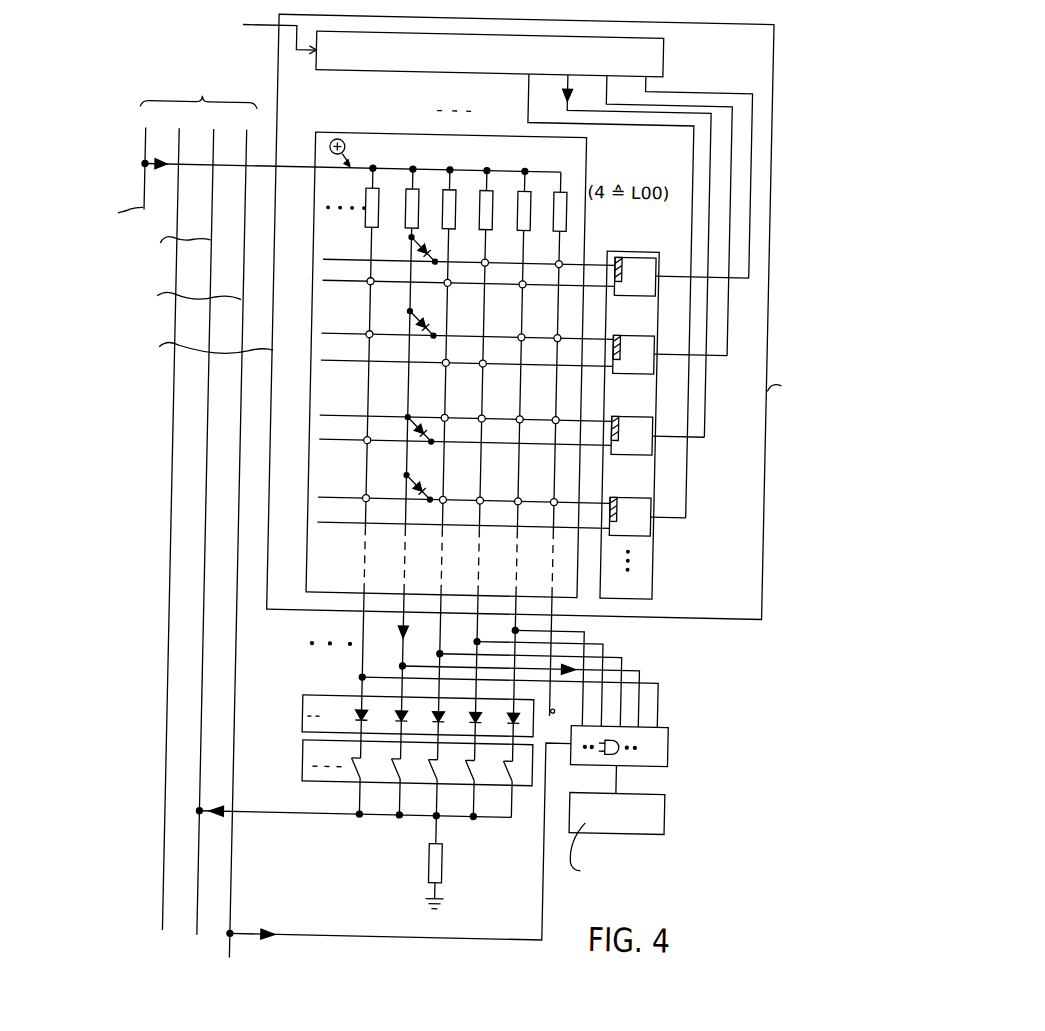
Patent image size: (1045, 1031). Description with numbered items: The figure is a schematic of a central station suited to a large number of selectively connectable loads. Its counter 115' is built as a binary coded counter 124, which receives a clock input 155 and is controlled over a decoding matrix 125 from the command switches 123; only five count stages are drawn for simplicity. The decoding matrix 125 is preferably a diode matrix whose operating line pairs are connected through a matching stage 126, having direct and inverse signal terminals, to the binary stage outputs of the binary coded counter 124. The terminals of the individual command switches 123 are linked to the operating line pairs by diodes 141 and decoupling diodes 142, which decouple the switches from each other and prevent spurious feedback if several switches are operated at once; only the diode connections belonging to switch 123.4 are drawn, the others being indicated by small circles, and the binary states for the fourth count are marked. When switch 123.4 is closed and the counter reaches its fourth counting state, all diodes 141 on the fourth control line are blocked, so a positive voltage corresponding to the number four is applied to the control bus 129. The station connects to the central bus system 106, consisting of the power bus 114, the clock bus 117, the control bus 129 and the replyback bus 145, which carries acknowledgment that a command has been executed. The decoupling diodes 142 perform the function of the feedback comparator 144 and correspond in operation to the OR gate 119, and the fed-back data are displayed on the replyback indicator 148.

The clock input line from Fig. 2 155 is at (246, 28).
The central bus system 106 is at (199, 88).
The power bus 114 is at (140, 163).
The clock bus 117 is at (174, 163).
The control bus 129 is at (209, 163).
The replyback bus 145 is at (241, 163).
The binary coded counter 124 is at (655, 52).
The decoding matrix 125 is at (443, 447).
The diodes 141 is at (406, 242).
The matching stage 126 is at (651, 579).
The counter 115' is at (563, 336).
The OR gate 119 is at (413, 704).
The decoupling diodes 142 is at (305, 690).
The command switches 123 is at (364, 796).
The switch 123.4 is at (409, 778).
The feedback comparator 144 is at (666, 756).
The replyback indicator 148 is at (666, 822).